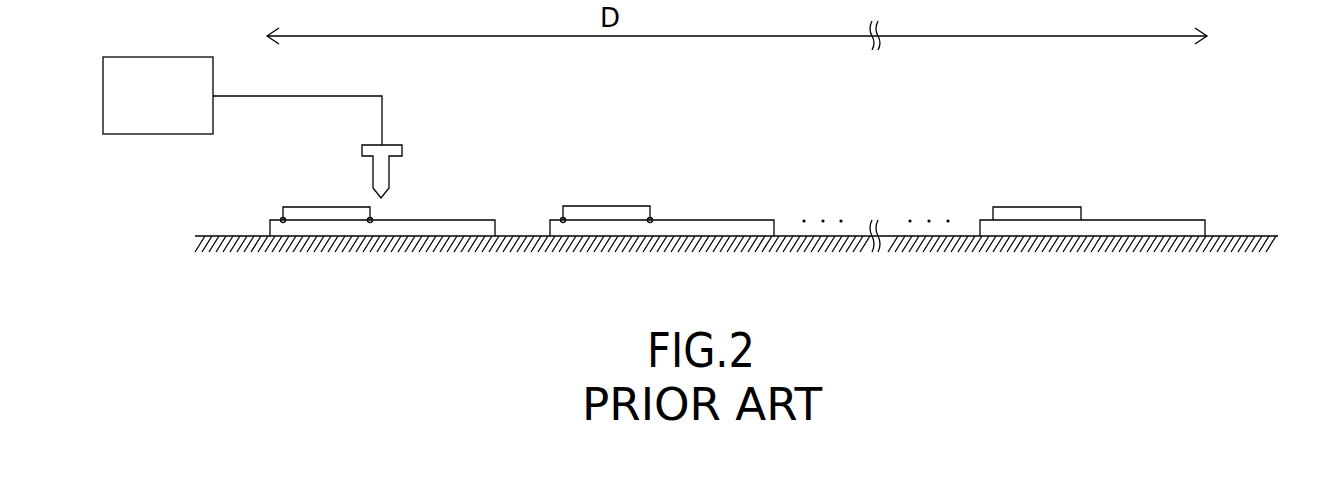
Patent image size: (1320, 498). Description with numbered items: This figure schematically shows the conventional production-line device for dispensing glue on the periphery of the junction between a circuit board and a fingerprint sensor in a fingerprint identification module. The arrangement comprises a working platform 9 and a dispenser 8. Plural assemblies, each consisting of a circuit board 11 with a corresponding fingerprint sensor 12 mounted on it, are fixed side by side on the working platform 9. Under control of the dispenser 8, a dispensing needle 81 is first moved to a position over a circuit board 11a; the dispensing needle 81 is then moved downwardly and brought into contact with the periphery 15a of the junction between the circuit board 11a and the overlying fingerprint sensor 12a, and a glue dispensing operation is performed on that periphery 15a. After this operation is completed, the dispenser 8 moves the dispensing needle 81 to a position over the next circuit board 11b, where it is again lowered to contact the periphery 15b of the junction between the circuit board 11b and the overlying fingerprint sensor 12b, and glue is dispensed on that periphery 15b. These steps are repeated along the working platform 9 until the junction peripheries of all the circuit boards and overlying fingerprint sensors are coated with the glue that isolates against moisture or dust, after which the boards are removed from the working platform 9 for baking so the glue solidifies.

The dispenser 8 is at (155, 72).
The dispensing needle 81 is at (385, 152).
The working platform 9 is at (1243, 235).
The circuit board 11 is at (1144, 228).
The circuit board 11a is at (428, 227).
The next circuit board 11b is at (712, 228).
The fingerprint sensor 12 is at (1038, 212).
The fingerprint sensor 12a is at (328, 211).
The fingerprint sensor 12b is at (606, 212).
The periphery 15a is at (281, 223).
The periphery 15b is at (654, 218).